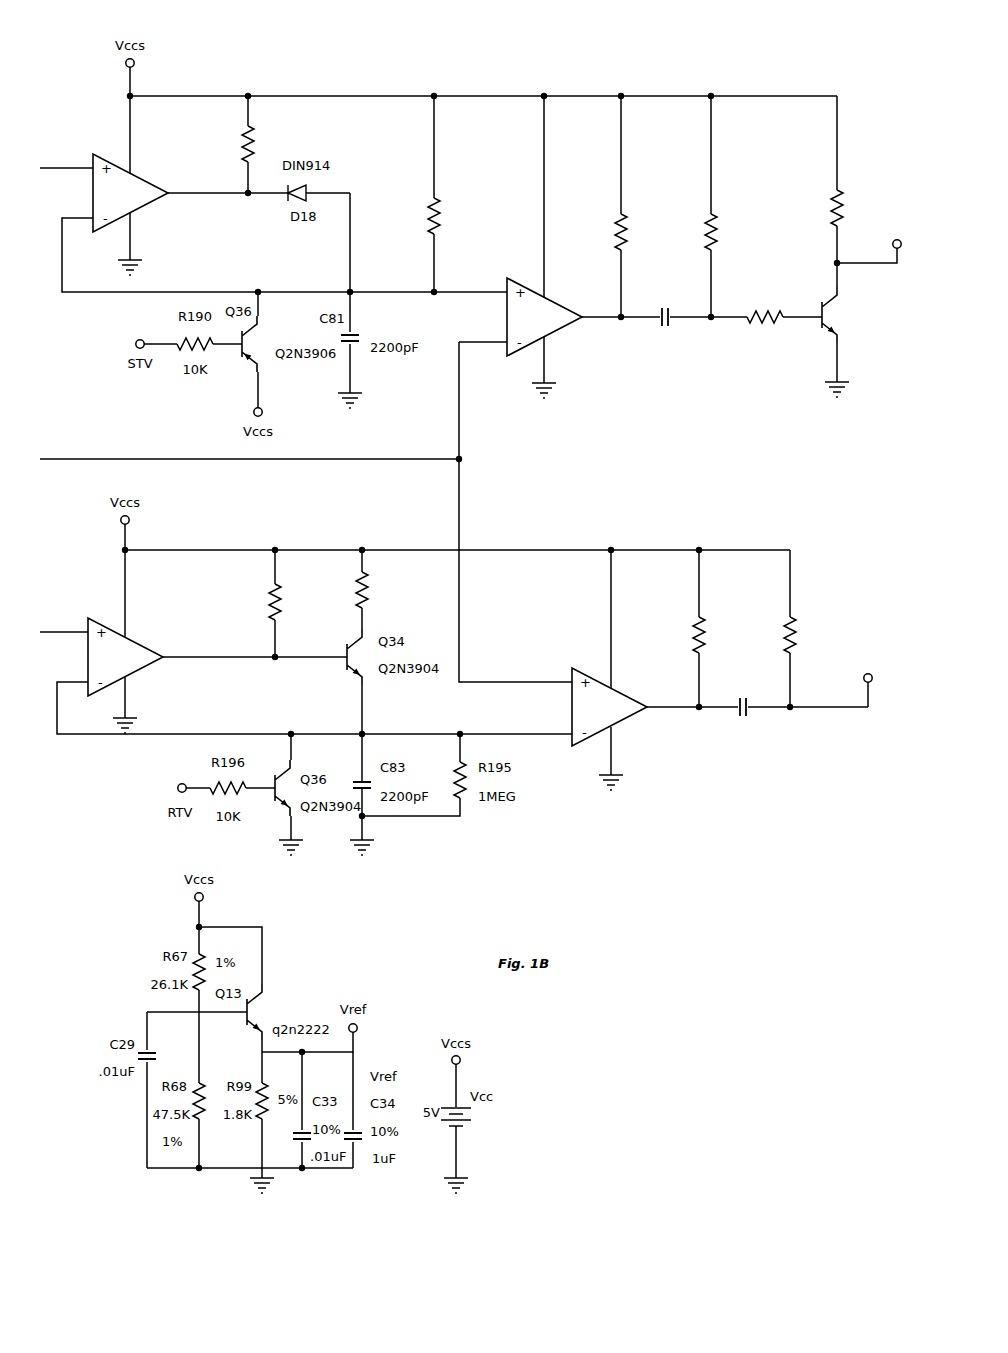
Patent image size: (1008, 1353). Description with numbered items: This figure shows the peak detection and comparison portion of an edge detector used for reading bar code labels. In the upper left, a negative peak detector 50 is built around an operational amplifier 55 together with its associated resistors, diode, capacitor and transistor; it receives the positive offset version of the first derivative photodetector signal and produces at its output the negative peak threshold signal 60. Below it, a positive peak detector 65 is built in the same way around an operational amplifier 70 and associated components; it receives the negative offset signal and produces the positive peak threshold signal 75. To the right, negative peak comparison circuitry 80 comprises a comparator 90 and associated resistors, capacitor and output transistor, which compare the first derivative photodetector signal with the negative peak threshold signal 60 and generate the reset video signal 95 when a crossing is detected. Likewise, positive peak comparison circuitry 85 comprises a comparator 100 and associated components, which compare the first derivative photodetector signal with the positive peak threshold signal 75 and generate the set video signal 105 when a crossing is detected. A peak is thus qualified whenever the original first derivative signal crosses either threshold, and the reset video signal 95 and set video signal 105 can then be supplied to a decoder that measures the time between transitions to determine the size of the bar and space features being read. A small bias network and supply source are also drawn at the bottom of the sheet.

The negative peak detector 50 is at (193, 85).
The operational amplifier 55 is at (103, 232).
The negative peak threshold signal 60 is at (456, 290).
The positive peak detector 65 is at (192, 536).
The operational amplifier 70 is at (135, 642).
The positive peak threshold signal 75 is at (545, 738).
The negative peak comparison circuitry 80 is at (848, 428).
The positive peak comparison circuitry 85 is at (572, 815).
The comparator 90 is at (558, 300).
The RTV signal 95 is at (900, 252).
The comparator 100 is at (621, 694).
The STV signal 105 is at (870, 690).